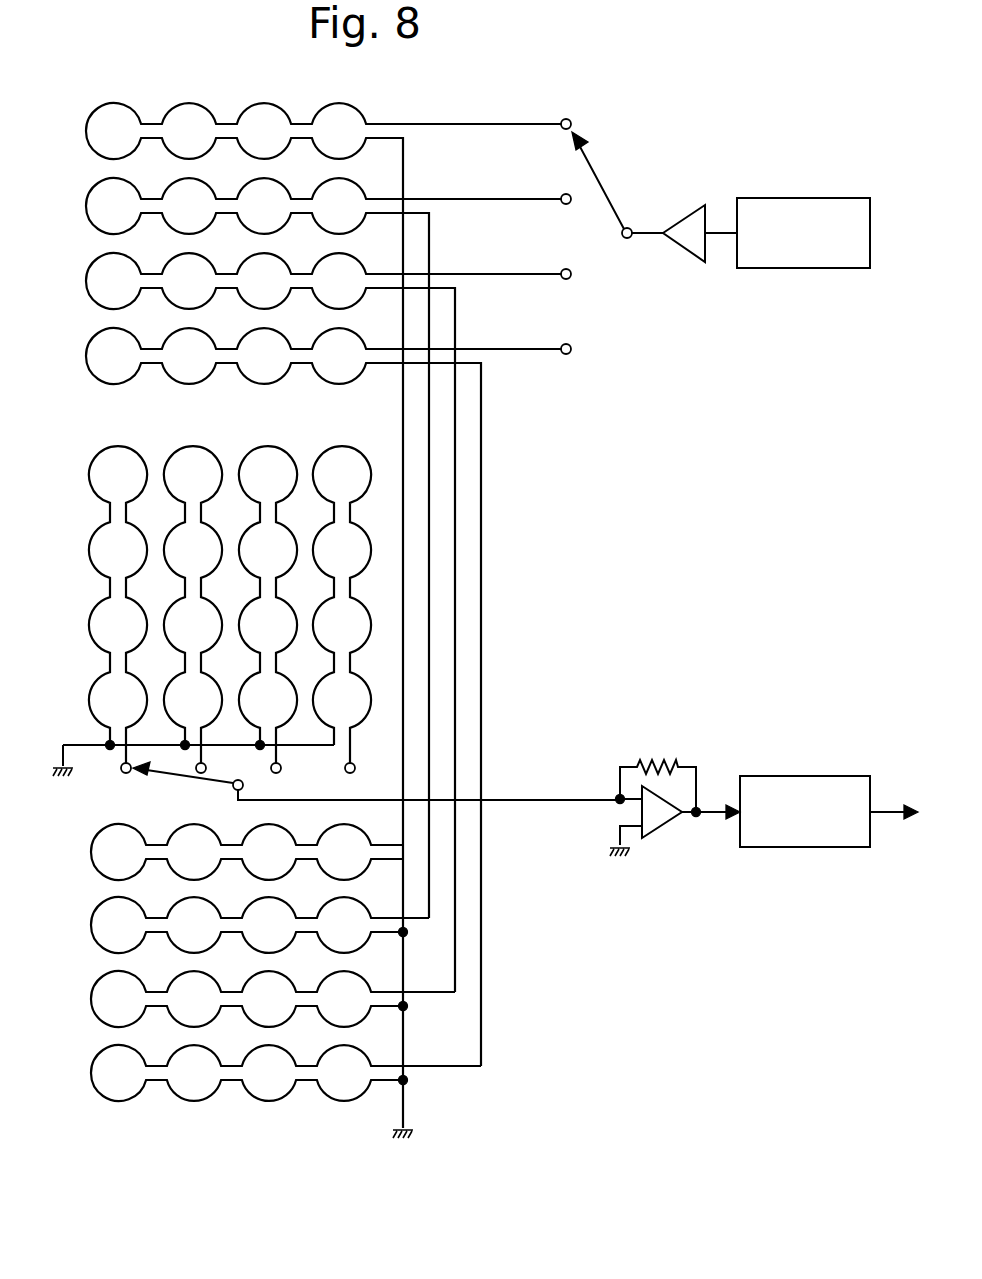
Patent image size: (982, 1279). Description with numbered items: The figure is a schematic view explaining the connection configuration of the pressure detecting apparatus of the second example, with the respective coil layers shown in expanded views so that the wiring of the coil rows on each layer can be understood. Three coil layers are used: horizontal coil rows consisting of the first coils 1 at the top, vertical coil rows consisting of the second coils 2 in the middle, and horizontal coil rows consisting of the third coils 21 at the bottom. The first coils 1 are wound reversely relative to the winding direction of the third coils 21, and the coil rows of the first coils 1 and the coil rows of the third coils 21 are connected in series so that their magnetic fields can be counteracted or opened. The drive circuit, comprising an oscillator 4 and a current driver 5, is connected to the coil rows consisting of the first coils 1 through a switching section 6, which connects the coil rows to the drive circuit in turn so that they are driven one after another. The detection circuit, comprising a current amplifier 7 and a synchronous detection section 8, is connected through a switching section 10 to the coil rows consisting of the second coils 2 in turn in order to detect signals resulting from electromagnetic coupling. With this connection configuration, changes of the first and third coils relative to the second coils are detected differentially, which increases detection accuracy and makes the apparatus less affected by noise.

The first coils 1 is at (112, 103).
The second coils 2 is at (98, 455).
The oscillator 4 is at (798, 197).
The current driver 5 is at (684, 218).
The switching section 6 is at (596, 170).
The current amplifier 7 is at (675, 738).
The synchronous detection section 8 is at (800, 775).
The switching section 10 is at (180, 777).
The third coils 21 is at (91, 852).